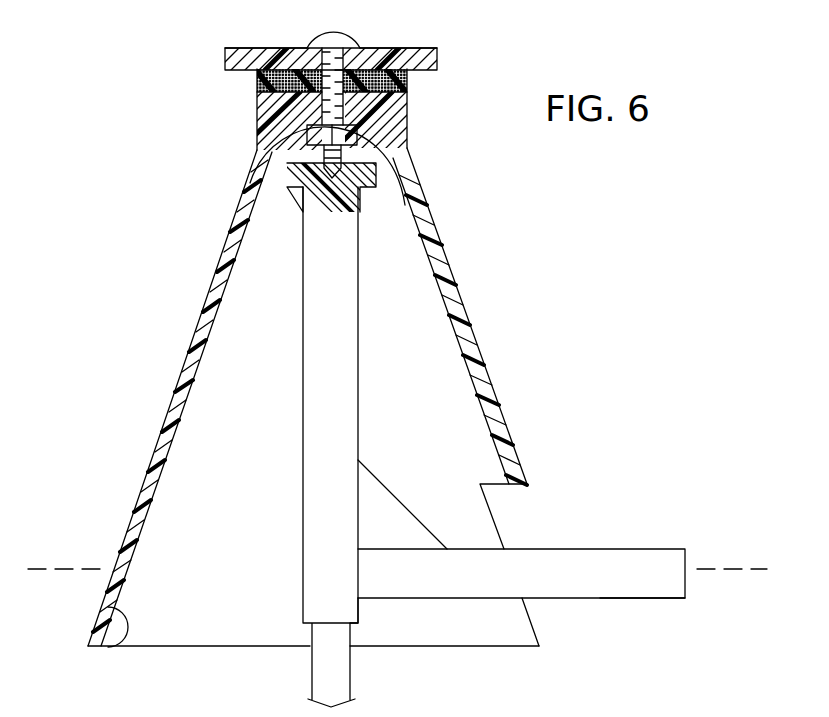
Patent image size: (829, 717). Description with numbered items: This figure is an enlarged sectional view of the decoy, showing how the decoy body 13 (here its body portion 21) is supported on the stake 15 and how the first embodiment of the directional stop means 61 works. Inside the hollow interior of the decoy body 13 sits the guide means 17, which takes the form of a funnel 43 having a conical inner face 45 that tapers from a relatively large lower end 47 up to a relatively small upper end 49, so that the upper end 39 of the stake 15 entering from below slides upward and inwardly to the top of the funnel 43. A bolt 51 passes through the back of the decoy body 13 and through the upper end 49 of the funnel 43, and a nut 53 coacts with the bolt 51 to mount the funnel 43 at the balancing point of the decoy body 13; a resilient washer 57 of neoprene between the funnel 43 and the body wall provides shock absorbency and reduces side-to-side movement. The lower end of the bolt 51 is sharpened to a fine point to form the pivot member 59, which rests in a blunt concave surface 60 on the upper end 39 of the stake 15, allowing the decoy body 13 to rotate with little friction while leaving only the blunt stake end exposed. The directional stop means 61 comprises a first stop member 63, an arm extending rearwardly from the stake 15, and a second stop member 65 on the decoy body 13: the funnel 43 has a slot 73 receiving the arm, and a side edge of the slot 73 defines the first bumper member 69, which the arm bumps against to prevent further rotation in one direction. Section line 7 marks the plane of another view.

The section line 7- 7 is at (50, 558).
The decoy body 13 is at (414, 39).
The stake 15 is at (297, 664).
The guide means 17 is at (158, 662).
The body portion 21 is at (265, 48).
The upper end of the stake 39 is at (365, 208).
The funnel 43 is at (228, 258).
The inner face 45 is at (109, 646).
The lower end of the funnel 47 is at (475, 647).
The upper end of the funnel 49 is at (270, 118).
The bolt 51 is at (342, 38).
The nut 53 is at (357, 138).
The resilient washer 57 is at (258, 86).
The pivot member 59 is at (300, 153).
The concave surface 60 is at (412, 167).
The directional stop means 61 is at (648, 620).
The first stop member 63 is at (612, 558).
The second stop member 65 is at (489, 508).
The first bumper member 69 is at (518, 535).
The slot 73 is at (549, 617).